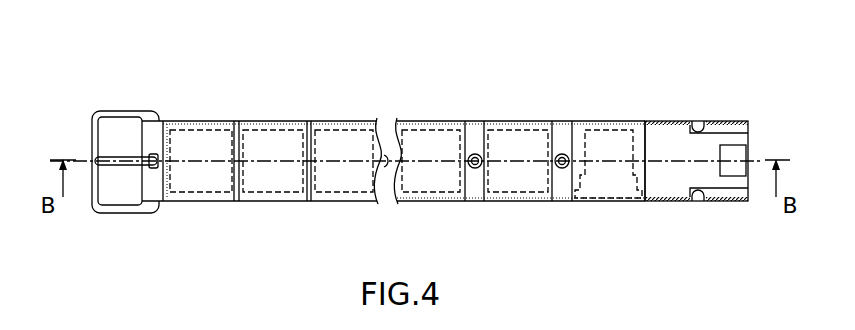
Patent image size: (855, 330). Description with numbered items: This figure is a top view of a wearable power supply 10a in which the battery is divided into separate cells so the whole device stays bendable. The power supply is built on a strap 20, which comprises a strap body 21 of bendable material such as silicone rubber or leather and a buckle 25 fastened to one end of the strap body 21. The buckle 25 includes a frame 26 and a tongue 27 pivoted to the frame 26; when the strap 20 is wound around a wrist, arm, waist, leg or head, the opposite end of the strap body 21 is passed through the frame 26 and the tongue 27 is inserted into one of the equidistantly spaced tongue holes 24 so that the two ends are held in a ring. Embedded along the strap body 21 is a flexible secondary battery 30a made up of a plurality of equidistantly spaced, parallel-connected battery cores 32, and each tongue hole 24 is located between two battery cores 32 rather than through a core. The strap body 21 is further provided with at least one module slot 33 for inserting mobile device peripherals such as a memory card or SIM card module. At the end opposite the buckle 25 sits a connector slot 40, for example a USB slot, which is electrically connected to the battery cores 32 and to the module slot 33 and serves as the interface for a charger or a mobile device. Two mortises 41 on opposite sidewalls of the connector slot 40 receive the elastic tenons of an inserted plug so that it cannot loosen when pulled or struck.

The wearable power supply 10a is at (410, 100).
The strap 20 is at (360, 121).
The strap body 21 is at (542, 202).
The tongue holes 24 is at (475, 154).
The buckle 25 is at (155, 62).
The frame 26 is at (112, 110).
The tongue 27 is at (122, 160).
The flexible secondary battery 30a is at (225, 52).
The battery cores 32 is at (197, 130).
The module slot 33 is at (598, 129).
The connector slot 40 is at (672, 121).
The mortises 41 is at (699, 121).